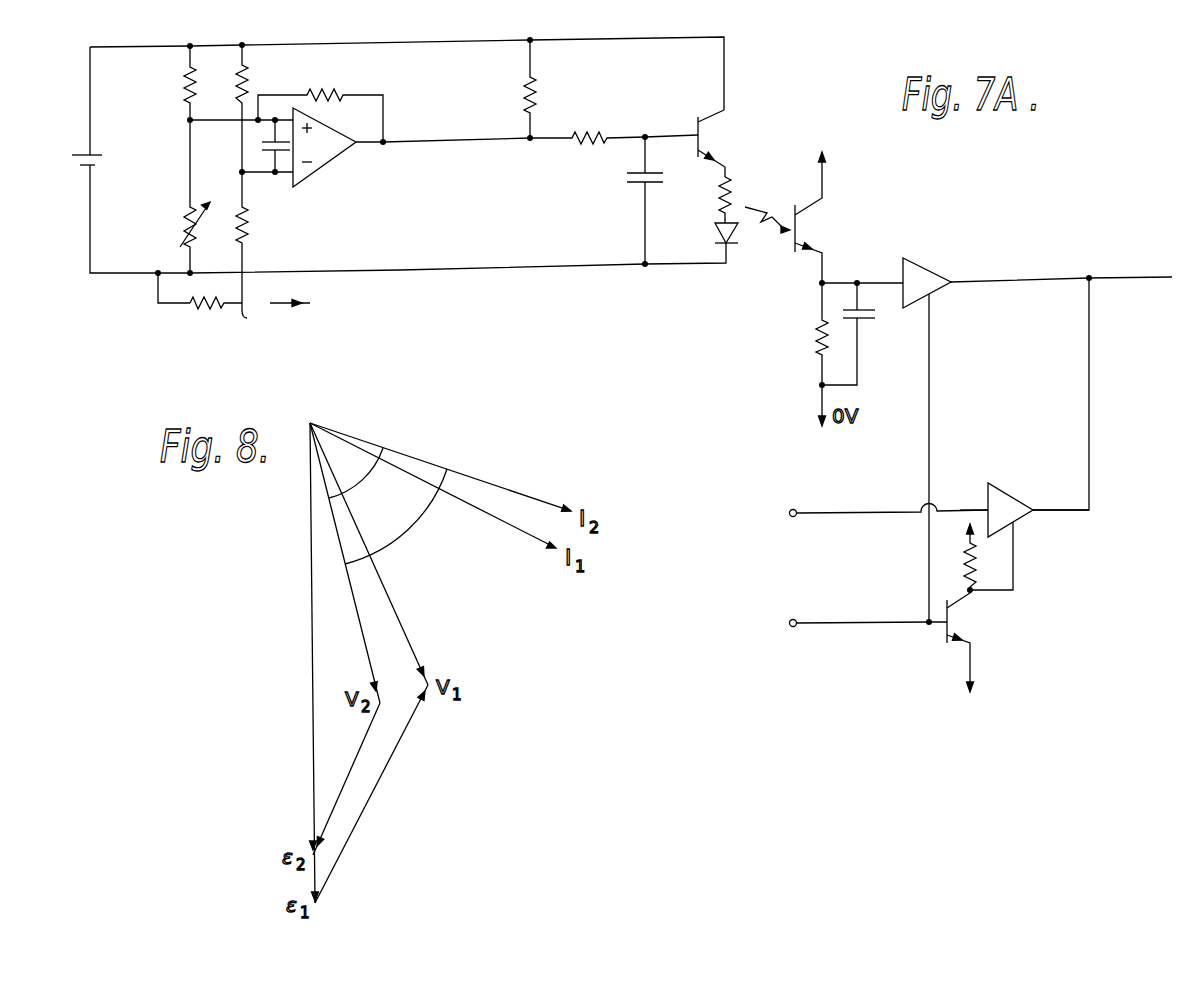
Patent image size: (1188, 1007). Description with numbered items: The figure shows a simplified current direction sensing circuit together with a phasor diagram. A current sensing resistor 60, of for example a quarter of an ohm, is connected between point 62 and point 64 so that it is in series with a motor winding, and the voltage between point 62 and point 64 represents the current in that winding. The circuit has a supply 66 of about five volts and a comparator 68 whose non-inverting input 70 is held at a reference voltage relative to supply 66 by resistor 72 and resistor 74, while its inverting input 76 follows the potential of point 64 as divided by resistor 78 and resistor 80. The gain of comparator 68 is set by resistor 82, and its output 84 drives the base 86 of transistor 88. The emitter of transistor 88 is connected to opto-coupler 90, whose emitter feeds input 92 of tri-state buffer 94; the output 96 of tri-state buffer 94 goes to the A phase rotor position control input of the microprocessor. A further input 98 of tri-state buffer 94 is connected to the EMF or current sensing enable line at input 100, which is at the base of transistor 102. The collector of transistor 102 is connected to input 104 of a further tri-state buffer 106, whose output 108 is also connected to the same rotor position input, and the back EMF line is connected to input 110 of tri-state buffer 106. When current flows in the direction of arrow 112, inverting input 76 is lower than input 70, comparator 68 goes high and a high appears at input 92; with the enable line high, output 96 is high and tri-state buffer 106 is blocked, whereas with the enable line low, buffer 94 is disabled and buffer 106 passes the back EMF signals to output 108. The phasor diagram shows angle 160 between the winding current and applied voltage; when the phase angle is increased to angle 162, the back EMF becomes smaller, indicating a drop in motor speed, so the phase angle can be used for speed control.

In FIG. 7A, the current sensing resistor 60 is at (200, 311).
In FIG. 7A, the point 62 is at (157, 303).
In FIG. 7A, the point 64 is at (235, 308).
In FIG. 7A, the supply 66 is at (90, 165).
In FIG. 7A, the comparator 68 is at (337, 152).
In FIG. 7A, the non-inverting input 70 is at (283, 118).
In FIG. 7A, the resistor 72 is at (187, 92).
In FIG. 7A, the resistor 74 is at (187, 212).
In FIG. 7A, the inverting input 76 is at (287, 175).
In FIG. 7A, the resistor 78 is at (252, 237).
In FIG. 7A, the resistor 80 is at (247, 76).
In FIG. 7A, the resistor 82 is at (340, 93).
In FIG. 7A, the output 84 is at (387, 147).
In FIG. 7A, the base 86 is at (683, 132).
In FIG. 7A, the transistor 88 is at (712, 134).
In FIG. 7A, the opto-coupler 90 is at (812, 226).
In FIG. 7A, the input 92 is at (902, 278).
In FIG. 7A, the tri-state buffer 94 is at (935, 282).
In FIG. 7A, the output 96 is at (950, 287).
In FIG. 7A, the further input 98 is at (930, 296).
In FIG. 7A, the input 100 is at (942, 628).
In FIG. 7A, the transistor 102 is at (962, 621).
In FIG. 7A, the input 104 is at (1016, 525).
In FIG. 7A, the further tri-state buffer 106 is at (1037, 514).
In FIG. 7A, the output 108 is at (1035, 505).
In FIG. 7A, the input 110 is at (986, 505).
In FIG. 7A, the arrow 112 is at (292, 305).
In FIG. 8, the angle 160 is at (358, 462).
In FIG. 8, the angle 162 is at (430, 510).